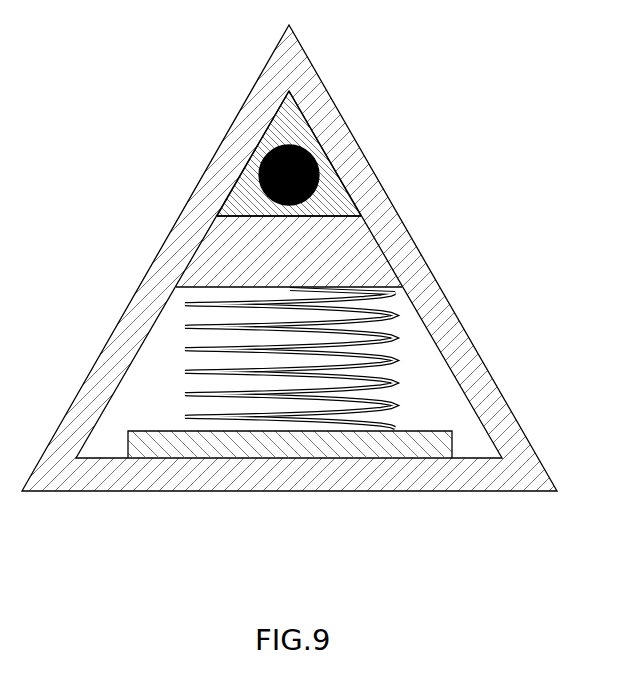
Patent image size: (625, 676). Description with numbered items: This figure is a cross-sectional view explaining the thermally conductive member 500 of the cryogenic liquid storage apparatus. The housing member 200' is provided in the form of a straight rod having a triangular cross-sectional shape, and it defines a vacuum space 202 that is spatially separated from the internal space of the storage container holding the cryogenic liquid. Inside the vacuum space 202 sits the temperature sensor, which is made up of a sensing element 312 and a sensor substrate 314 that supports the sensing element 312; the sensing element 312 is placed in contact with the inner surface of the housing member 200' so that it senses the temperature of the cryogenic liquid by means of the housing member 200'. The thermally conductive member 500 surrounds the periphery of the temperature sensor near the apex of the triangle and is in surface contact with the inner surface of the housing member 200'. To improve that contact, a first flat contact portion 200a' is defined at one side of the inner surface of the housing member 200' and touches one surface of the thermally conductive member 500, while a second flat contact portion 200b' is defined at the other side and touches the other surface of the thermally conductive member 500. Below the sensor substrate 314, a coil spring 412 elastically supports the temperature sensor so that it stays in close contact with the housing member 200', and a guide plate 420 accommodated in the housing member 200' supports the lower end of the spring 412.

The housing member 200' is at (296, 258).
The vacuum space 202 is at (420, 367).
The thermally conductive member 500 is at (291, 110).
The first flat contact portion 200a' is at (219, 153).
The second flat contact portion 200b' is at (360, 153).
The sensing element 312 is at (320, 166).
The sensor substrate 314 is at (355, 248).
The spring 412 is at (265, 414).
The guide plate 420 is at (383, 443).